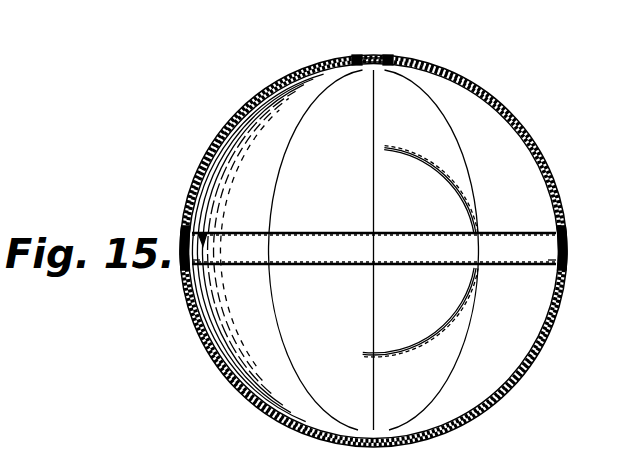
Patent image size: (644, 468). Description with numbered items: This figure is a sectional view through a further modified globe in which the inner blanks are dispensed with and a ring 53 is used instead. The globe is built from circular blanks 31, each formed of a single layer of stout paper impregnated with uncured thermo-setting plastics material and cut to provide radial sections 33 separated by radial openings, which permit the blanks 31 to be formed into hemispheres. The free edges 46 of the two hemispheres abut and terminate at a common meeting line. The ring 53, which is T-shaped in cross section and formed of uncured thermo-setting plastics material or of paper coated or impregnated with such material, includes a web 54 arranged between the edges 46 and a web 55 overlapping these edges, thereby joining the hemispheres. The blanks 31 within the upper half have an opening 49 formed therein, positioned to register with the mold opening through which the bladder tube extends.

The blank 31 is at (505, 98).
The radial section 33 is at (492, 151).
The free edge 46 is at (183, 238).
The opening 49 is at (373, 58).
The ring 53 is at (207, 237).
The web 54 is at (182, 252).
The web 55 is at (238, 239).